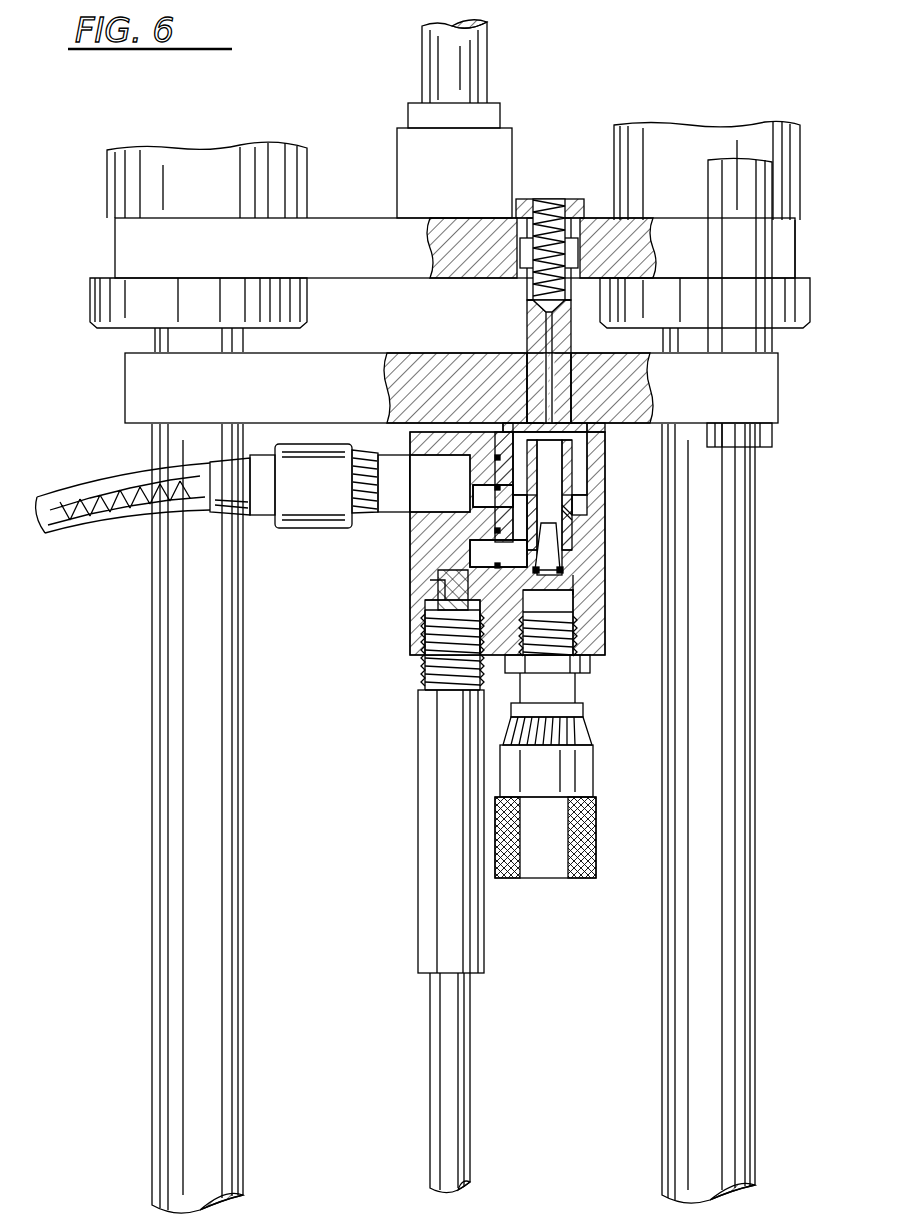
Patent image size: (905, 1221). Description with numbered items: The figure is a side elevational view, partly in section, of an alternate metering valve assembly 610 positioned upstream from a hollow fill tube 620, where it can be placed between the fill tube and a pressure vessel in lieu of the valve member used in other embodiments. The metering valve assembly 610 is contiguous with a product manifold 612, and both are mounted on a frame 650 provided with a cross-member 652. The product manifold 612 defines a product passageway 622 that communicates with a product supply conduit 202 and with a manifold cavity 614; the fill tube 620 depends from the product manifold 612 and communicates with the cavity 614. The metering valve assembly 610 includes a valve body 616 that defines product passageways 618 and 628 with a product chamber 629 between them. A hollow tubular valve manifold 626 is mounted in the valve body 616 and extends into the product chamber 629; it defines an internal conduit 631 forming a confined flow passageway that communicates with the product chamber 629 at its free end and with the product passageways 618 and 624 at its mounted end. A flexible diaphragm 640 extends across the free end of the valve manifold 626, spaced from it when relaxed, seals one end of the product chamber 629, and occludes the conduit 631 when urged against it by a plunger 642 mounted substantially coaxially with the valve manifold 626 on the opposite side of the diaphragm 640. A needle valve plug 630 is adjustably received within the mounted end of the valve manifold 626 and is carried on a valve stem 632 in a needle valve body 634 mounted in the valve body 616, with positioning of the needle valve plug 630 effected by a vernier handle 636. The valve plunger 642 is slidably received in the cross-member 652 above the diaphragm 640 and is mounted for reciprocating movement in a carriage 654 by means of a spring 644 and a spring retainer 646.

The product supply conduit 202 is at (103, 513).
The metering valve assembly 610 is at (606, 625).
The product manifold 612 is at (411, 658).
The manifold cavity 614 is at (440, 548).
The valve body 616 is at (583, 578).
The product passageway 618 is at (430, 592).
The fill tube 620 is at (440, 1118).
The product passageway 622 is at (460, 515).
The product passageway 624 is at (550, 545).
The valve manifold 626 is at (566, 510).
The product passageway 628 is at (498, 458).
The product chamber 629 is at (512, 428).
The needle valve plug 630 is at (545, 570).
The internal conduit 631 is at (555, 462).
The valve stem 632 is at (552, 597).
The needle valve body 634 is at (550, 688).
The vernier handle 636 is at (578, 765).
The flexible diaphragm 640 is at (565, 425).
The plunger 642 is at (530, 322).
The spring 644 is at (528, 205).
The spring retainer 646 is at (568, 200).
The frame 650 is at (172, 738).
The cross-member 652 is at (142, 370).
The carriage 654 is at (135, 247).